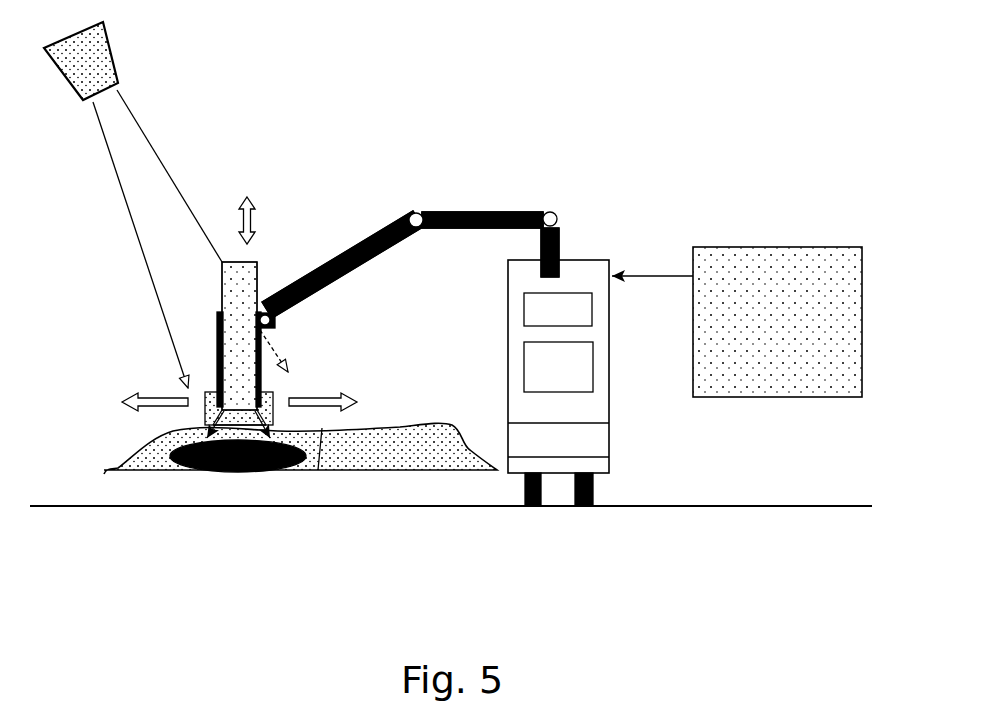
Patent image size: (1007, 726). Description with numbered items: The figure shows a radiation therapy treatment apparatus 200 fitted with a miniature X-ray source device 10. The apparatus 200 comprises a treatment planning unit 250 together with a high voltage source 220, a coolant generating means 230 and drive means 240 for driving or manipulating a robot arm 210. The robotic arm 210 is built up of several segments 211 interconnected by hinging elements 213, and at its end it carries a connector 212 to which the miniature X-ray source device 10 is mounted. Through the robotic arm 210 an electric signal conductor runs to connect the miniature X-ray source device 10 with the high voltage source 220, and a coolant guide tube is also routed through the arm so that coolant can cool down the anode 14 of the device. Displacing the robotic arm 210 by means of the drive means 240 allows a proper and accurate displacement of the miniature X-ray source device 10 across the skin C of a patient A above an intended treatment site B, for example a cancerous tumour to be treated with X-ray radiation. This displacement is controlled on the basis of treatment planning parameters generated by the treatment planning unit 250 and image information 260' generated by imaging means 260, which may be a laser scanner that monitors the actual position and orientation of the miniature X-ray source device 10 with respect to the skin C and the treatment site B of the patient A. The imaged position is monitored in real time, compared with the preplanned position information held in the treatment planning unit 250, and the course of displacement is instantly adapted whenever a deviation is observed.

The miniature X-ray source device 10 is at (237, 365).
The anode 14 is at (212, 415).
The radiation therapy treatment apparatus 200 is at (655, 155).
The robot arm 210 is at (380, 185).
The segments 211 is at (335, 257).
The connector 212 is at (275, 323).
The hinging elements 213 is at (418, 212).
The high voltage source 220 is at (569, 304).
The coolant generating means 230 is at (577, 370).
The drive means 240 is at (577, 437).
The treatment planning unit 250 is at (750, 268).
The imaging means 260 is at (138, 61).
The image information 260' is at (168, 239).
The patient A is at (373, 462).
The treatment site B is at (233, 475).
The skin C is at (318, 470).